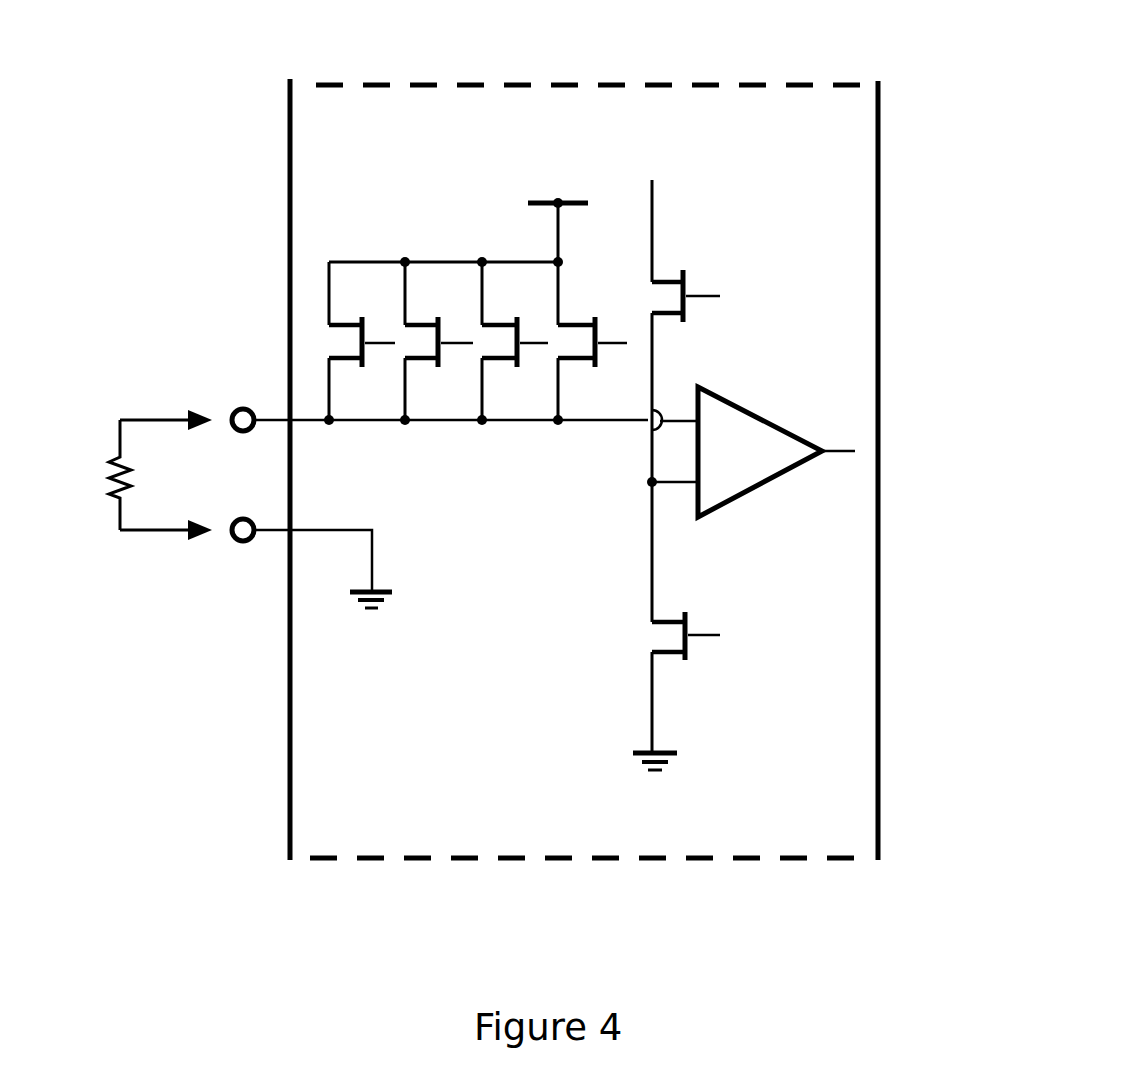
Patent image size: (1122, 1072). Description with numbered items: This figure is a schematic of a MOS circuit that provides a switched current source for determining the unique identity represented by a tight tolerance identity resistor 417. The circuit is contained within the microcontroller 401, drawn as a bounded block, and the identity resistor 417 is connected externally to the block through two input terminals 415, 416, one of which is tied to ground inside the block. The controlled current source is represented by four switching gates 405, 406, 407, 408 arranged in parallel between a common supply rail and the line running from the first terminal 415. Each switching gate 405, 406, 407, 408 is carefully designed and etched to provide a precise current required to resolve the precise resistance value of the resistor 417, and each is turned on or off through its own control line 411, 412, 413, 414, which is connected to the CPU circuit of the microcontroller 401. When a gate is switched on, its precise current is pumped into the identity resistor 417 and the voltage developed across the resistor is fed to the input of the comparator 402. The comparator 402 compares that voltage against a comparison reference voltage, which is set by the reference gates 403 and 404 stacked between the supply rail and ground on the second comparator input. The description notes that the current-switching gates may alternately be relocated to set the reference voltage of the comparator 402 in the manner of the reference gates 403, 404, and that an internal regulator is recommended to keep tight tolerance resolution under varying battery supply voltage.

The microcontroller 401 is at (833, 163).
The comparator 402 is at (760, 440).
The reference gate 403 is at (688, 283).
The reference gate 404 is at (710, 637).
The switching gate 405 is at (578, 325).
The switching gate 406 is at (490, 325).
The switching gate 407 is at (417, 325).
The switching gate 408 is at (345, 323).
The control line 411 is at (615, 345).
The control line 412 is at (537, 345).
The control line 413 is at (462, 345).
The control line 414 is at (385, 345).
The input terminal 415 is at (262, 412).
The input terminal 416 is at (258, 537).
The identity resistor 417 is at (108, 487).